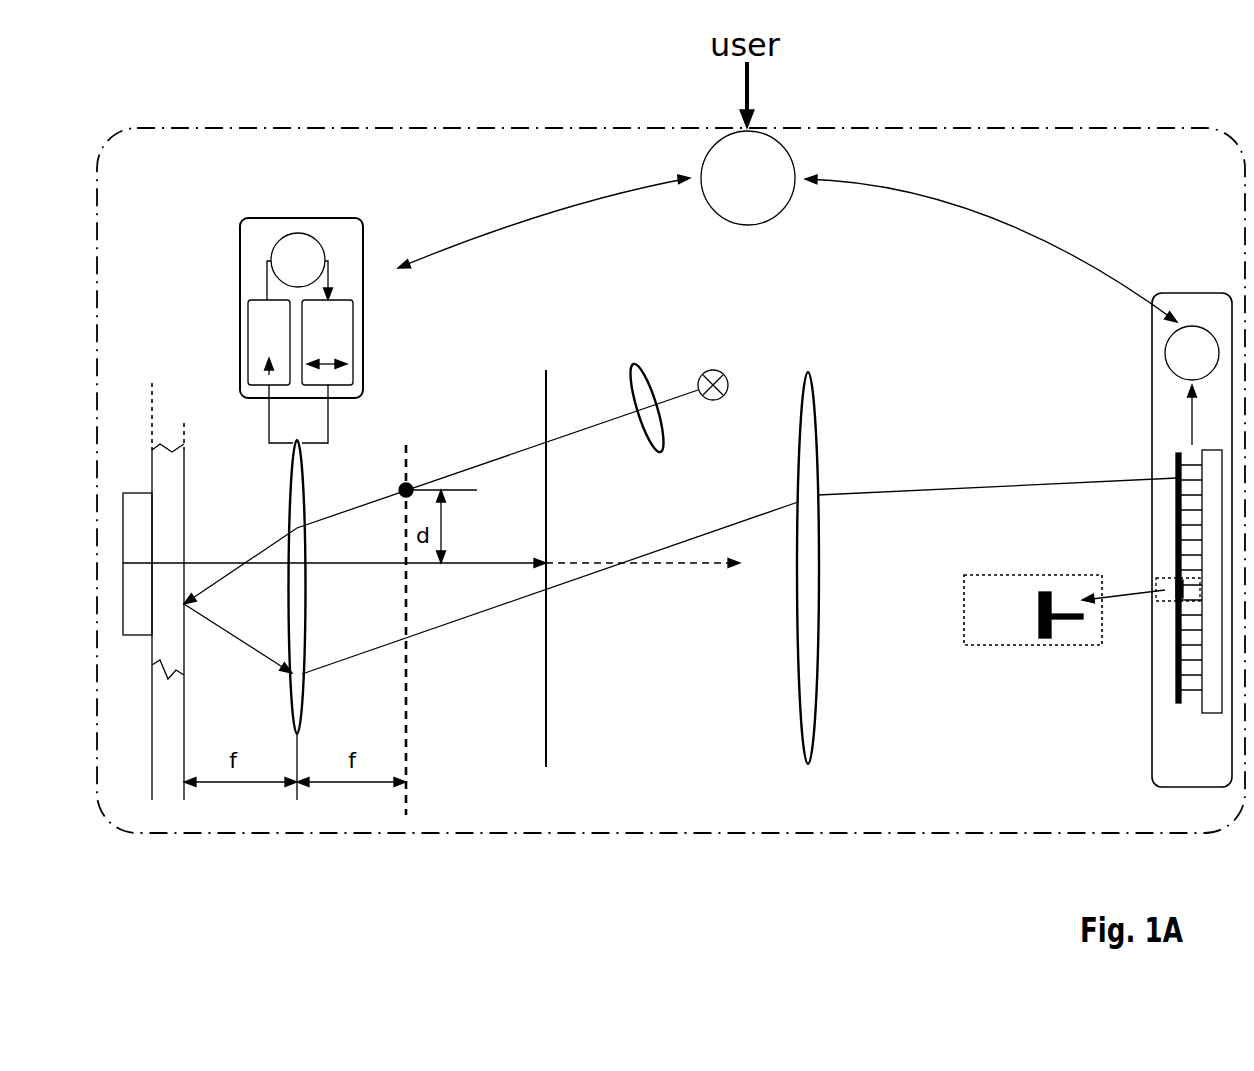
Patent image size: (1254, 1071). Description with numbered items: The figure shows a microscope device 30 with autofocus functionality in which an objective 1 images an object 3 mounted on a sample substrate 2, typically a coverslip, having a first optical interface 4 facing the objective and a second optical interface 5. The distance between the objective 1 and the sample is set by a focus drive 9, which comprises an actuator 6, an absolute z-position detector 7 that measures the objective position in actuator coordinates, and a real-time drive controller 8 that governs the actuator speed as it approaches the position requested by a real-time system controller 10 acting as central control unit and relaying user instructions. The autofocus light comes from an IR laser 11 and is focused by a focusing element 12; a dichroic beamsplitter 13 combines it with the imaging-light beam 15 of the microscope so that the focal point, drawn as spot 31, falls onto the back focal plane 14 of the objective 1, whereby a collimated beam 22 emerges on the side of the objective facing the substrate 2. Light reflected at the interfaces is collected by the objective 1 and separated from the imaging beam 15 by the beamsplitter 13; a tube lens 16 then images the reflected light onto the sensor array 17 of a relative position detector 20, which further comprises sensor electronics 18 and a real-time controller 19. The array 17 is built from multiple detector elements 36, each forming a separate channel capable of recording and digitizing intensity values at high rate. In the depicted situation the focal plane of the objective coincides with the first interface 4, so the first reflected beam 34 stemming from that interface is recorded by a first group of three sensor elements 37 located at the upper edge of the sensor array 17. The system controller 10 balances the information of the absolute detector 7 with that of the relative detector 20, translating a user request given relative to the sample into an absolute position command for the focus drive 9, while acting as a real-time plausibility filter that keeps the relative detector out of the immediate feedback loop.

The objective 1 is at (305, 688).
The sample substrate 2 is at (154, 646).
The object 3 is at (138, 503).
The first optical interface 4 is at (184, 599).
The second optical interface 5 is at (152, 576).
The actuator 6 is at (327, 342).
The absolute z-position detector 7 is at (269, 342).
The real-time drive controller 8 is at (298, 260).
The focus drive 9 is at (245, 268).
The real-time system controller 10 is at (748, 178).
The IR laser 11 is at (726, 375).
The focusing element 12 is at (645, 378).
The dichroic beamsplitter 13 is at (545, 412).
The back focal plane 14 is at (407, 698).
The imaging-light beam 15 is at (473, 563).
The tube lens 16 is at (803, 665).
The sensor array 17 is at (1177, 705).
The sensor electronics 18 is at (1210, 703).
The real-time controller 19 is at (1192, 353).
The relative position detector 20 is at (1162, 405).
The collimated beam 22 is at (268, 543).
The microscope device 30 is at (245, 153).
The spot 31 is at (400, 484).
The first reflected beam 34 is at (222, 635).
The detector element 36 is at (1039, 617).
The first group of three sensor elements 37 is at (1175, 492).